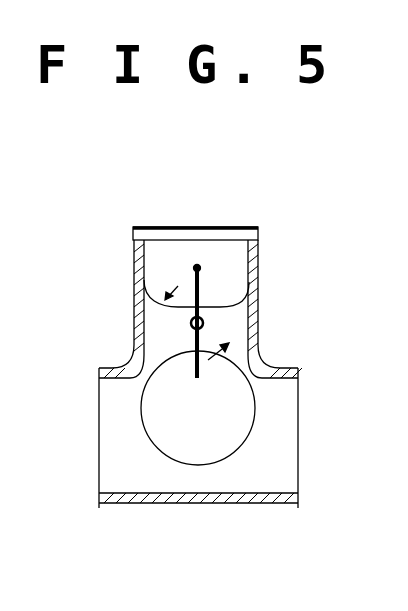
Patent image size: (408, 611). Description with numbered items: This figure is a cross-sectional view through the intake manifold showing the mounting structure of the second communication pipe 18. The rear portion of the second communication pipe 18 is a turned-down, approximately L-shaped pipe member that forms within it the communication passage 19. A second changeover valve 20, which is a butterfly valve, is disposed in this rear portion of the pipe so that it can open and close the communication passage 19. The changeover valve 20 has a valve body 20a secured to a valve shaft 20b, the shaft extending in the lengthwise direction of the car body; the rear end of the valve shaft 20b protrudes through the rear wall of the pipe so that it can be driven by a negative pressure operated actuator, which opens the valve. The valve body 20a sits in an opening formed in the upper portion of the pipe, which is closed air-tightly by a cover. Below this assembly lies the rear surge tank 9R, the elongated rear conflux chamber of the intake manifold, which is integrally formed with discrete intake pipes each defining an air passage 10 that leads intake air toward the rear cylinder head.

The second communication pipe 18 is at (258, 258).
The communication passage 19 is at (162, 298).
The second changeover valve 20 is at (203, 268).
The valve body 20a is at (194, 269).
The valve shaft 20b is at (191, 323).
The air passage 10 is at (253, 413).
The rear surge tank 9R is at (214, 503).